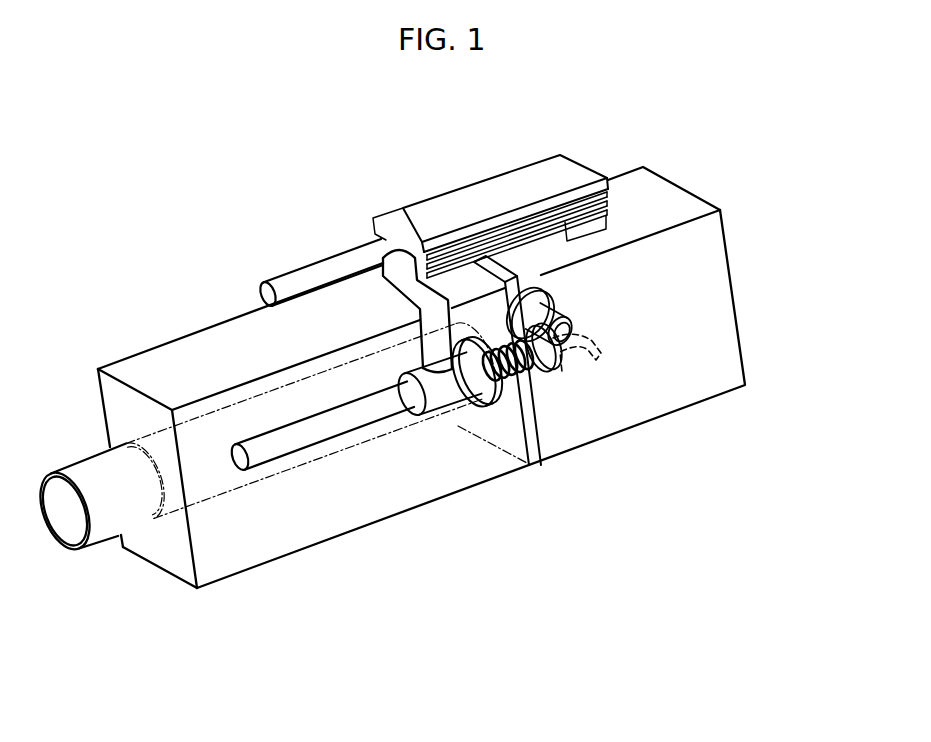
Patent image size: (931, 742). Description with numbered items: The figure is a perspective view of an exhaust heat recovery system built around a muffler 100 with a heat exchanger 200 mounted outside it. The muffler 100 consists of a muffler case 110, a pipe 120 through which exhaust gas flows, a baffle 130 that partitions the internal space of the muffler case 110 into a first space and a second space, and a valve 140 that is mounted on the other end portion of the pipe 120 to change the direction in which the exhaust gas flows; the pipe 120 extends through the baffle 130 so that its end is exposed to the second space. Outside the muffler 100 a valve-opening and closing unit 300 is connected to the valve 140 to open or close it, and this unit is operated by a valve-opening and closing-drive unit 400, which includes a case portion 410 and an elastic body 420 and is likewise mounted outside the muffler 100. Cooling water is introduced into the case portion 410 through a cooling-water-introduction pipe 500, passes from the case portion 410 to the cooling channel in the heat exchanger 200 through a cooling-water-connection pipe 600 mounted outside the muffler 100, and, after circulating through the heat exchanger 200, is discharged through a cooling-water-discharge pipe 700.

The muffler 100 is at (449, 429).
The muffler case 110 is at (147, 362).
The pipe 120 is at (70, 470).
The baffle 130 is at (537, 470).
The valve 140 is at (600, 343).
The heat exchanger 200 is at (540, 170).
The valve-opening and closing unit 300 is at (556, 300).
The valve-opening and closing-drive unit 400 is at (590, 521).
The case portion 410 is at (452, 390).
The elastic body 420 is at (543, 373).
The cooling-water-introduction pipe 500 is at (325, 428).
The cooling-water-connection pipe 600 is at (398, 275).
The cooling-water-discharge pipe 700 is at (308, 278).